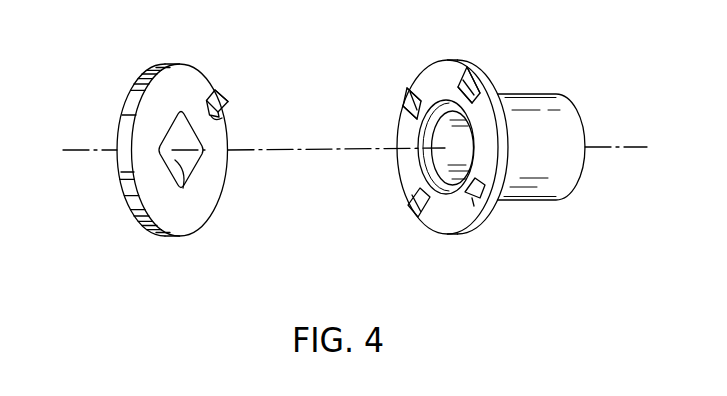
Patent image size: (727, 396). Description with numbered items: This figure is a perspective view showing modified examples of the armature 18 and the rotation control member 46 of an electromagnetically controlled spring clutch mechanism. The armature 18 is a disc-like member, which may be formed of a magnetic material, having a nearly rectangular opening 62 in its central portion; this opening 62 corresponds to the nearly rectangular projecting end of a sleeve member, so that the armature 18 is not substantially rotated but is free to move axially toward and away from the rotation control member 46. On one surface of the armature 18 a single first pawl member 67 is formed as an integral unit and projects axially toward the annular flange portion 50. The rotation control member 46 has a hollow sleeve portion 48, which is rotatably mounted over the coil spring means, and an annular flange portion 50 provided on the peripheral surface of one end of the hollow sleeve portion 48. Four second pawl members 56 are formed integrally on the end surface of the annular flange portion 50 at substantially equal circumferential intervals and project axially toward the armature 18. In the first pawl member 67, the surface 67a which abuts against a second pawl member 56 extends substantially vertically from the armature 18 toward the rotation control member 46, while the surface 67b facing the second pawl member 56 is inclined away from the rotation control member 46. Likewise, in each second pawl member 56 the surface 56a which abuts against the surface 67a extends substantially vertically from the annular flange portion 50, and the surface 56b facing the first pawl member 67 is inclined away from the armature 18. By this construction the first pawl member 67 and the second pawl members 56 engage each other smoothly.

The armature 18 is at (192, 220).
The rectangular opening 62 is at (177, 187).
The first pawl member 67 is at (228, 92).
The abutting surface of first pawl member 67a is at (222, 114).
The inclined surface of first pawl member 67b is at (216, 89).
The rotation control member 46 is at (518, 205).
The hollow sleeve portion 48 is at (543, 192).
The annular flange portion 50 is at (456, 222).
The second pawl members 56 is at (401, 96).
The abutting surface of second pawl member 56a is at (414, 88).
The inclined surface of second pawl member 56b is at (402, 108).